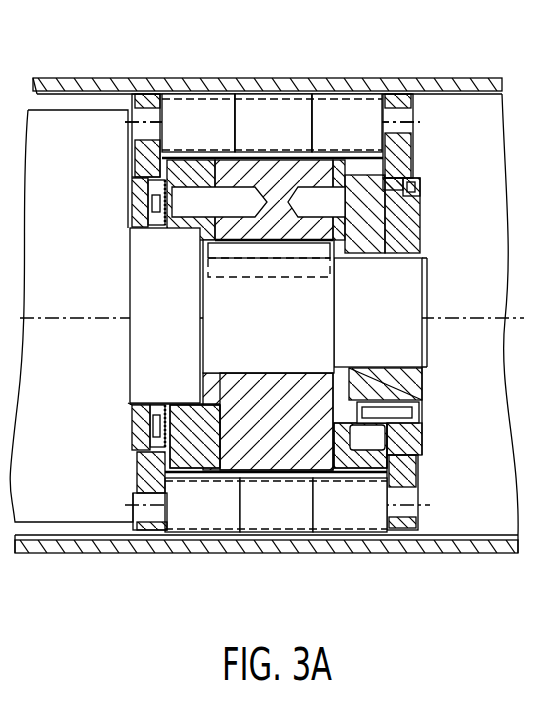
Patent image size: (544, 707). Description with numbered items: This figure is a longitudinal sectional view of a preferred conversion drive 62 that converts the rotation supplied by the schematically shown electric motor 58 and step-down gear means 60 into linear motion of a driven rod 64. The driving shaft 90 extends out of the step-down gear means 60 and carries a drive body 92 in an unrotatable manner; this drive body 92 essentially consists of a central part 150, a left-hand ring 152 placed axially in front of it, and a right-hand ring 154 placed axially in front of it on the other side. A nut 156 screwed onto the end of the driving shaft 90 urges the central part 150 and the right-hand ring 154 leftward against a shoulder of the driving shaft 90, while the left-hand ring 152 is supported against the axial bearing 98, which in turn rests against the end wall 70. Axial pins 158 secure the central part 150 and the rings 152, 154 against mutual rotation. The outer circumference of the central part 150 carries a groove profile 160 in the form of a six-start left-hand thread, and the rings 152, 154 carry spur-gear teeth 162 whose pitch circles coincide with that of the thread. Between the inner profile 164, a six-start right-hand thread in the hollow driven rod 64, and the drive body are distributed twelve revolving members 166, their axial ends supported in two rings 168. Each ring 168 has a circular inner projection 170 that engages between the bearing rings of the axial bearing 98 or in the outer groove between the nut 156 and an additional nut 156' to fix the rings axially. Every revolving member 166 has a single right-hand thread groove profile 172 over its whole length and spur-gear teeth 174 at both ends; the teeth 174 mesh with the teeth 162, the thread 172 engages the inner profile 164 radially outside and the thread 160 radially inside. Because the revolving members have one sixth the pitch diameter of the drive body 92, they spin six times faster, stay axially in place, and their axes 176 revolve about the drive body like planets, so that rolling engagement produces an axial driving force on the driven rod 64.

The electric motor 58 is at (71, 272).
The step-down gear means 60 is at (78, 127).
The conversion drive 62 is at (288, 65).
The driven rod 64 is at (465, 82).
The end wall 70 is at (140, 432).
The driving shaft 90 is at (283, 349).
The drive body 92 is at (245, 467).
The axial bearing 98 is at (138, 463).
The central part 150 is at (297, 455).
The left-hand ring 152 is at (193, 455).
The right-hand ring 154 is at (387, 470).
The nut 156 is at (425, 400).
The additional nut 156' is at (424, 365).
The axial pins 158 is at (190, 205).
The groove profile 160 is at (258, 448).
The teeth 162 is at (372, 457).
The inner profile 164 is at (458, 537).
The revolving members 166 is at (299, 110).
The rings 168 is at (134, 167).
The inner projection 170 is at (142, 187).
The groove profile 172 is at (255, 93).
The teeth 174 is at (190, 95).
The axes 176 is at (419, 122).